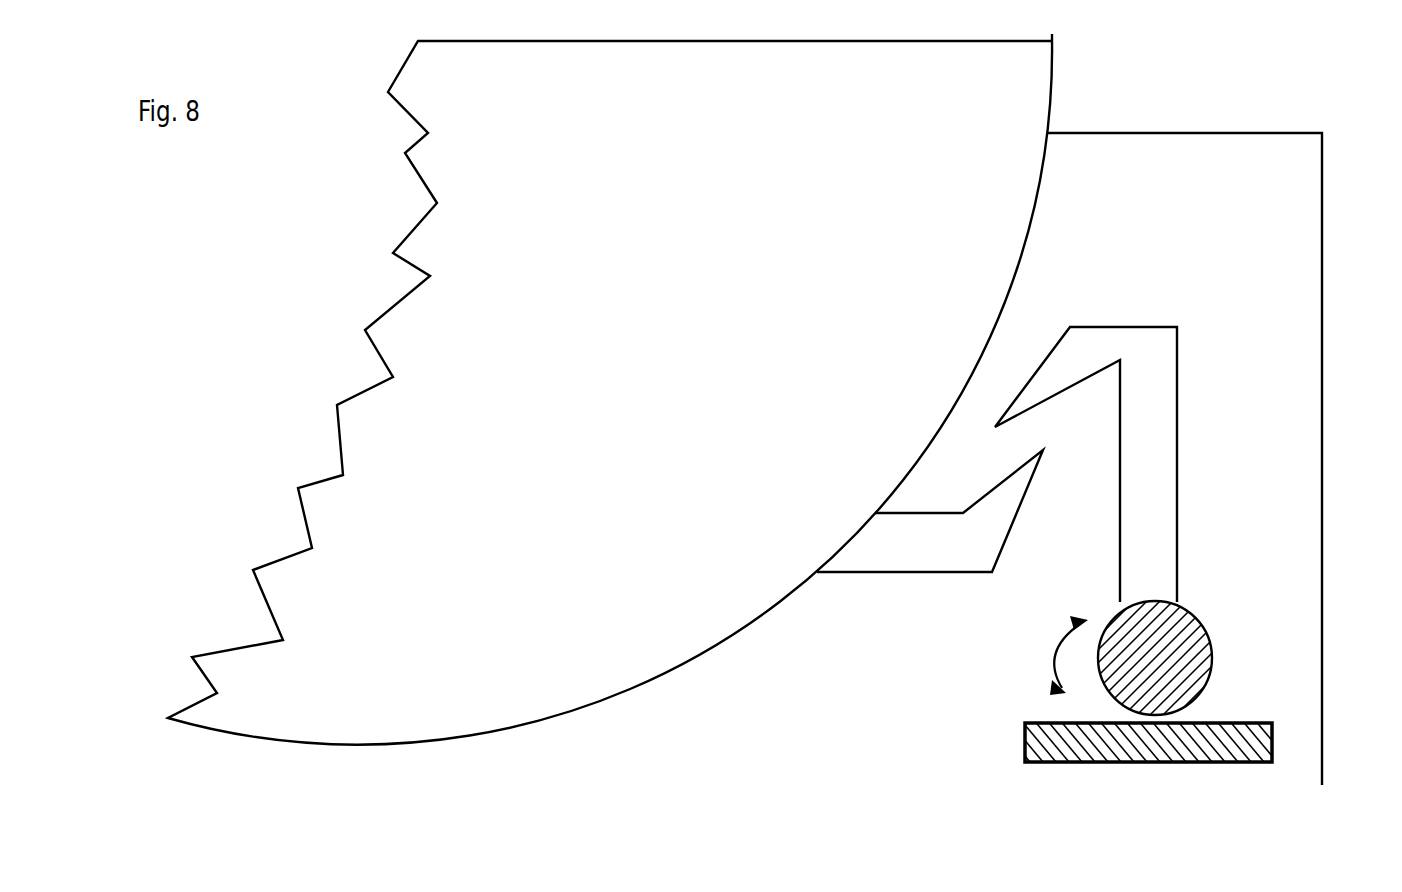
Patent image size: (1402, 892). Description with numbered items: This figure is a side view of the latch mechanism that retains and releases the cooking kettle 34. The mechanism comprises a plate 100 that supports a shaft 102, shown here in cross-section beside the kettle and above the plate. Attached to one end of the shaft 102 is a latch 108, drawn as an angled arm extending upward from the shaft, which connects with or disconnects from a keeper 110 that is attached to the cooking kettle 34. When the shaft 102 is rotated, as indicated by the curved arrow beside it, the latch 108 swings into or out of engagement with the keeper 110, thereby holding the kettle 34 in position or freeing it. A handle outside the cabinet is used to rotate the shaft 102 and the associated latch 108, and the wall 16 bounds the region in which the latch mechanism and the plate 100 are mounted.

The cooking kettle 34 is at (652, 428).
The housing wall 16 is at (1323, 365).
The latch 108 is at (1144, 325).
The keeper 110 is at (890, 563).
The shaft 102 is at (1207, 633).
The plate 100 is at (1107, 762).